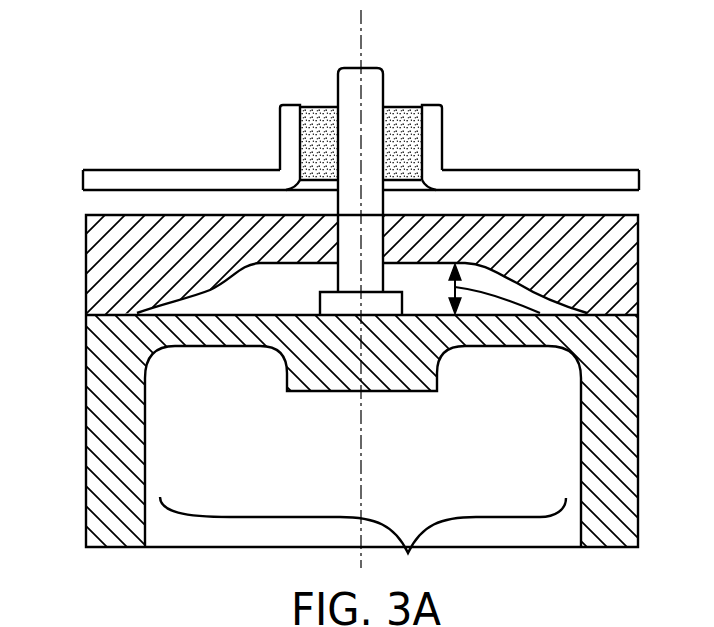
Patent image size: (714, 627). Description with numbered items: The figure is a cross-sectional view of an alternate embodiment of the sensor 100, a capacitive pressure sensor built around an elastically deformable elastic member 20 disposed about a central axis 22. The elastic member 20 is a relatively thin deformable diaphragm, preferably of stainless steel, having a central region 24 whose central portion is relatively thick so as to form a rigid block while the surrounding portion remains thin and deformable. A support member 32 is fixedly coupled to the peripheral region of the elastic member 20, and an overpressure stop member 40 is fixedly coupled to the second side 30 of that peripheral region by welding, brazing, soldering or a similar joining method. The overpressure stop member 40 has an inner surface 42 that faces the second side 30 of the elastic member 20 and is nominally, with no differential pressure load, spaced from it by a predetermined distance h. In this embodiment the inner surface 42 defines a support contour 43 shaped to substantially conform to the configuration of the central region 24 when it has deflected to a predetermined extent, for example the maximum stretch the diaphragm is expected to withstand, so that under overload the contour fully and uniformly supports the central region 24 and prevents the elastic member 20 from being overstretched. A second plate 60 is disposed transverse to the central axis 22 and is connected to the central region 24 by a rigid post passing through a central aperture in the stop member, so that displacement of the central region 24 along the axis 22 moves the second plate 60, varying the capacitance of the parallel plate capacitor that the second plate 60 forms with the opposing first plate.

The sensor 100 is at (560, 58).
The central axis 22 is at (361, 25).
The second plate 60 is at (88, 180).
The second side 30 is at (424, 307).
The overpressure stop member 40 is at (364, 265).
The inner surface 42 is at (217, 286).
The support contour 43 is at (497, 275).
The predetermined distance h is at (497, 327).
The support member 32 is at (98, 400).
The elastic member 20 is at (503, 346).
The central region 24 is at (363, 546).